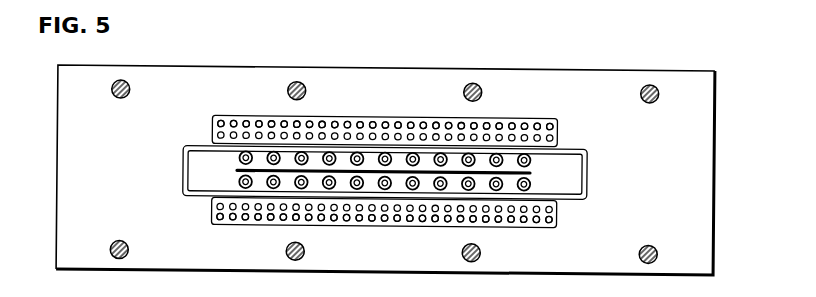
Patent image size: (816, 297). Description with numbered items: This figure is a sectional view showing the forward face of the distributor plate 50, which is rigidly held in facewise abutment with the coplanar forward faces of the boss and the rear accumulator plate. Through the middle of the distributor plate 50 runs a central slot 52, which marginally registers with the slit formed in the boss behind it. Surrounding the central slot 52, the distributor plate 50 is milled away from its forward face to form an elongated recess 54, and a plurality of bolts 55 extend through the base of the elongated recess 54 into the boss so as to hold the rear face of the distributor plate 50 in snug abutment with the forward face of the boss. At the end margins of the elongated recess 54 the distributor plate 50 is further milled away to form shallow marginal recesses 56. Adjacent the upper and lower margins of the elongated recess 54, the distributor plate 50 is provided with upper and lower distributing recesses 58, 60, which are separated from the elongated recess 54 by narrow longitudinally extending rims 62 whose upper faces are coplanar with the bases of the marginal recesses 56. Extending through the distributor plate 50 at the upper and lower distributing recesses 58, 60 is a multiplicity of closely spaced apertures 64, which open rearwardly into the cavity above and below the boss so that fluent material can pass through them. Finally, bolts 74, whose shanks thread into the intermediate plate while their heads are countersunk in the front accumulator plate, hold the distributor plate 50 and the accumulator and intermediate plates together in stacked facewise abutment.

The distributor plate 50 is at (691, 68).
The central slot 52 is at (531, 172).
The elongated recess 54 is at (572, 180).
The bolts 55 is at (210, 146).
The shallow marginal recesses 56 is at (183, 167).
The upper distributing recess 58 is at (366, 122).
The lower distributing recess 60 is at (367, 225).
The narrow longitudinally extending rims 62 is at (263, 146).
The closely spaced apertures 64 is at (512, 123).
The bolts 74 is at (128, 82).